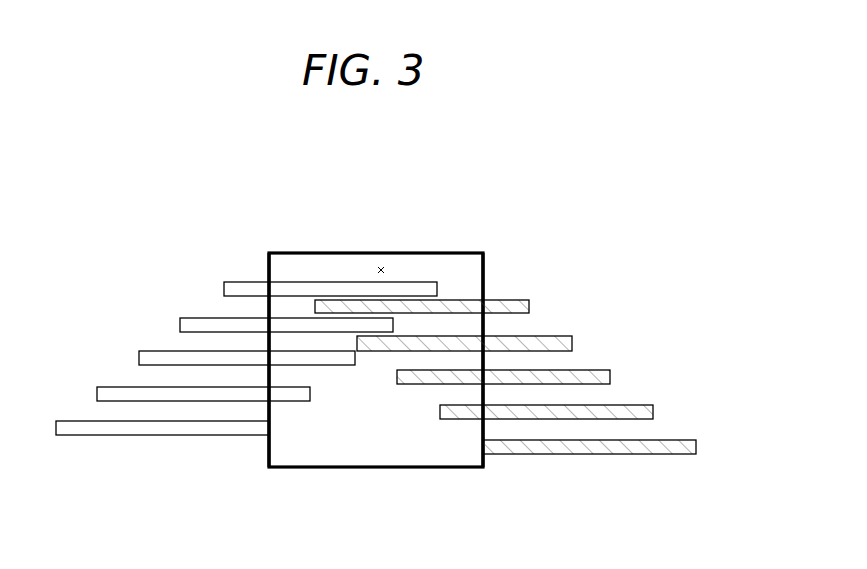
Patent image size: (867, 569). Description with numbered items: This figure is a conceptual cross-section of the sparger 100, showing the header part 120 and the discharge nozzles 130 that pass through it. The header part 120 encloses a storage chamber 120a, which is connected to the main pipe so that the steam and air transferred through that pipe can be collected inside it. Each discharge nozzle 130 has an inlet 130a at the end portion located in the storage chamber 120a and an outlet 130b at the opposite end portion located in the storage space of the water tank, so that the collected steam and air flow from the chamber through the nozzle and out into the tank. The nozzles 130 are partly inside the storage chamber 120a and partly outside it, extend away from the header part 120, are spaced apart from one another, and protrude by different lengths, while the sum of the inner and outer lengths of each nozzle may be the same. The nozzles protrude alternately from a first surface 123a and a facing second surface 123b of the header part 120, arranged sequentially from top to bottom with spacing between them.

The electrode assembly 100 is at (143, 196).
The header part 120 is at (437, 253).
The storage chamber 120a is at (380, 265).
The first surface 123a is at (269, 271).
The second surface 123b is at (484, 271).
The discharge nozzle 130 is at (335, 365).
The inlet 130a is at (310, 394).
The outlet 130b is at (97, 395).